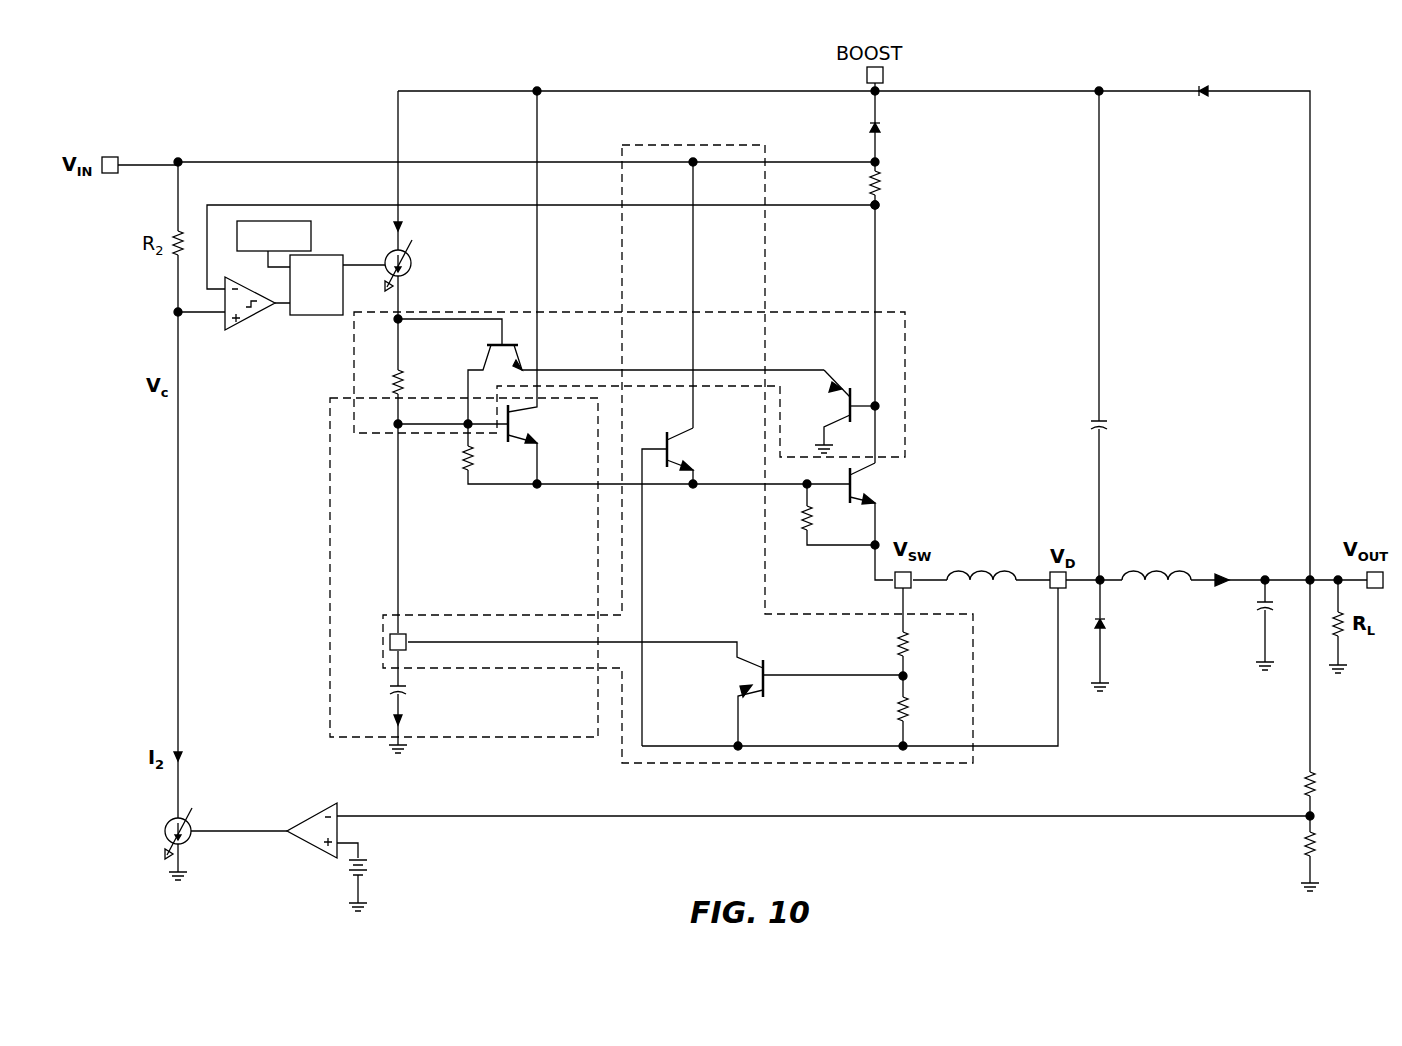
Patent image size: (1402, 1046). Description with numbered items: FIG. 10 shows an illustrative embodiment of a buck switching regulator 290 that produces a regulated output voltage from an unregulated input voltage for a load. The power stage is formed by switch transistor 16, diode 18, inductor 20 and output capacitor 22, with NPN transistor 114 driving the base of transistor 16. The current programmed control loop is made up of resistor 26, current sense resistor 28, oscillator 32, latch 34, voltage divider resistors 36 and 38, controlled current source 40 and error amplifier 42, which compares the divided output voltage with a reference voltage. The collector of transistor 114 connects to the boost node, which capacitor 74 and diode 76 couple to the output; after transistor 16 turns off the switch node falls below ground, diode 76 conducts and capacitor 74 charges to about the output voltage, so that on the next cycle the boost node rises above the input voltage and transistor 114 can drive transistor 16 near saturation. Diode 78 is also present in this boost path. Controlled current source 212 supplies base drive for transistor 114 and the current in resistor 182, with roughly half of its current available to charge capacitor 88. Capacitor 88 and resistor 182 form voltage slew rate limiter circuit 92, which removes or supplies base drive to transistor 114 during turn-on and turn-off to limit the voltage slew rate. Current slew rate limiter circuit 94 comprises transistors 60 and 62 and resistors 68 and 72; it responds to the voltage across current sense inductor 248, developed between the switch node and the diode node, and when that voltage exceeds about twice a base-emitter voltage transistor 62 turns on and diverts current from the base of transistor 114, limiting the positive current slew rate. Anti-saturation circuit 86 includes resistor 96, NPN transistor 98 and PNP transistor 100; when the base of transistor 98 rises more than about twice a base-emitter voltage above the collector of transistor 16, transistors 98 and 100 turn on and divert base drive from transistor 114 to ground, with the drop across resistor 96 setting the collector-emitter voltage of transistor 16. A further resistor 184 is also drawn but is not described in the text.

The transistor 16 is at (863, 472).
The diode 18 is at (1107, 622).
The inductor 20 is at (1158, 570).
The capacitor 22 is at (1257, 605).
The resistor 26 is at (185, 232).
The current sense resistor 28 is at (883, 187).
The oscillator 32 is at (311, 237).
The latch 34 is at (322, 317).
The voltage divider resistor 36 is at (1315, 782).
The voltage divider resistor 38 is at (1318, 843).
The controlled current source 40 is at (162, 825).
The error amplifier 42 is at (312, 813).
The transistor 60 is at (682, 434).
The transistor 62 is at (747, 694).
The resistor 68 is at (910, 642).
The resistor 72 is at (907, 707).
The capacitor 74 is at (1105, 429).
The diode 76 is at (1207, 94).
The diode 78 is at (883, 127).
The anti-saturation circuit 86 is at (906, 330).
The capacitor 88 is at (392, 688).
The positive and negative voltage slew rate limiter circuit 92 is at (490, 738).
The positive and negative current slew rate limiter circuit 94 is at (625, 752).
The resistor 96 is at (404, 380).
The NPN transistor 98 is at (485, 368).
The PNP transistor 100 is at (830, 385).
The NPN transistor 114 is at (528, 408).
The resistor 182 is at (463, 458).
The resistor 184 is at (803, 520).
The controlled current source 212 is at (413, 262).
The current sense inductor 248 is at (980, 573).
The regulator 290 is at (1323, 177).